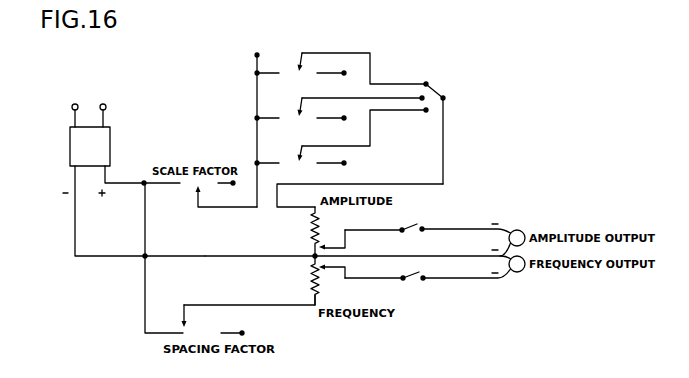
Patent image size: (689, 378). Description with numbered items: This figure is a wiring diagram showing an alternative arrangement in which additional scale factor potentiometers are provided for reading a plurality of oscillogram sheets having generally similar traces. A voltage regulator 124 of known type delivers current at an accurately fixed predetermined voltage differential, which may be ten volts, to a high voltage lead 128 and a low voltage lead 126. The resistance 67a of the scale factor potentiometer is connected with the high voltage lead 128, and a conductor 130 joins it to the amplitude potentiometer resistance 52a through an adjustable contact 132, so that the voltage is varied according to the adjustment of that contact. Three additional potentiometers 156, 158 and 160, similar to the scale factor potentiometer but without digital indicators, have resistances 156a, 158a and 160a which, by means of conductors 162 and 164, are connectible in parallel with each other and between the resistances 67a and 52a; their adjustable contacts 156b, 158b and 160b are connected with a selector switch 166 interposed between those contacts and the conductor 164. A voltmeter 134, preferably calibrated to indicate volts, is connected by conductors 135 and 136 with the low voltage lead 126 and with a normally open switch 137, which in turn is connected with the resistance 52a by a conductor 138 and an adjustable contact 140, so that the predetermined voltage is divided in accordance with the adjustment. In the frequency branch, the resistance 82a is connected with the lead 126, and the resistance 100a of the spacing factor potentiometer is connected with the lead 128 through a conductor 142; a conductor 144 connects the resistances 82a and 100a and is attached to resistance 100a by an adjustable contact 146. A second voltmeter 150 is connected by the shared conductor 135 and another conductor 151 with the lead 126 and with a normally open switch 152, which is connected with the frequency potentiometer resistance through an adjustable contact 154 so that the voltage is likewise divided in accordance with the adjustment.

The voltage regulator 124 is at (97, 155).
The high voltage lead 128 is at (114, 181).
The low voltage lead 126 is at (75, 227).
The conductor 130 is at (230, 190).
The resistance of potentiometer 67 67a is at (203, 187).
The adjustable contact 132 is at (195, 193).
The conductor 142 is at (145, 300).
The conductor 144 is at (205, 305).
The adjustable contact 146 is at (181, 320).
The resistance of potentiometer 100 100a is at (204, 333).
The conductor 162 is at (257, 131).
The additional potentiometer 160 is at (257, 73).
The resistance of potentiometer 160 160a is at (307, 76).
The adjustable contact of potentiometer 160 160b is at (299, 62).
The additional potentiometer 158 is at (257, 118).
The resistance of potentiometer 158 158a is at (307, 121).
The adjustable contact of potentiometer 158 158b is at (299, 109).
The additional potentiometer 156 is at (257, 163).
The resistance of potentiometer 156 156a is at (307, 166).
The adjustable contact of potentiometer 156 156b is at (299, 154).
The selector switch 166 is at (442, 96).
The conductor 164 is at (406, 184).
The resistance of potentiometer 52 52a is at (313, 238).
The adjustable contact 140 is at (337, 248).
The conductor 138 is at (350, 230).
The normally open switch 137 is at (414, 226).
The conductor 136 is at (453, 229).
The voltmeter 134 is at (519, 230).
The conductor 135 is at (436, 256).
The resistance of potentiometer 82 82a is at (313, 288).
The adjustable contact 154 is at (337, 267).
The normally open switch 152 is at (413, 280).
The conductor 151 is at (462, 280).
The voltmeter 150 is at (518, 272).